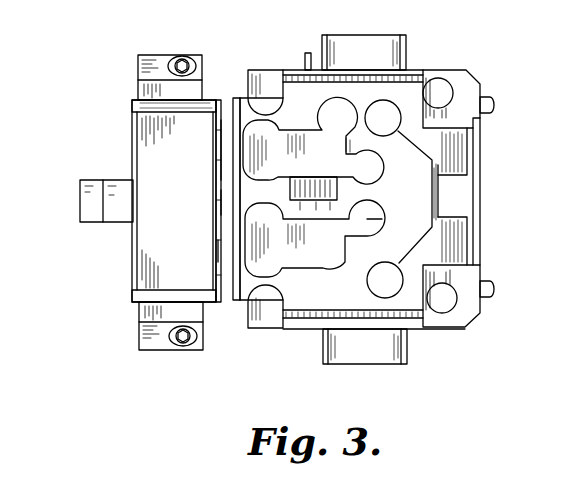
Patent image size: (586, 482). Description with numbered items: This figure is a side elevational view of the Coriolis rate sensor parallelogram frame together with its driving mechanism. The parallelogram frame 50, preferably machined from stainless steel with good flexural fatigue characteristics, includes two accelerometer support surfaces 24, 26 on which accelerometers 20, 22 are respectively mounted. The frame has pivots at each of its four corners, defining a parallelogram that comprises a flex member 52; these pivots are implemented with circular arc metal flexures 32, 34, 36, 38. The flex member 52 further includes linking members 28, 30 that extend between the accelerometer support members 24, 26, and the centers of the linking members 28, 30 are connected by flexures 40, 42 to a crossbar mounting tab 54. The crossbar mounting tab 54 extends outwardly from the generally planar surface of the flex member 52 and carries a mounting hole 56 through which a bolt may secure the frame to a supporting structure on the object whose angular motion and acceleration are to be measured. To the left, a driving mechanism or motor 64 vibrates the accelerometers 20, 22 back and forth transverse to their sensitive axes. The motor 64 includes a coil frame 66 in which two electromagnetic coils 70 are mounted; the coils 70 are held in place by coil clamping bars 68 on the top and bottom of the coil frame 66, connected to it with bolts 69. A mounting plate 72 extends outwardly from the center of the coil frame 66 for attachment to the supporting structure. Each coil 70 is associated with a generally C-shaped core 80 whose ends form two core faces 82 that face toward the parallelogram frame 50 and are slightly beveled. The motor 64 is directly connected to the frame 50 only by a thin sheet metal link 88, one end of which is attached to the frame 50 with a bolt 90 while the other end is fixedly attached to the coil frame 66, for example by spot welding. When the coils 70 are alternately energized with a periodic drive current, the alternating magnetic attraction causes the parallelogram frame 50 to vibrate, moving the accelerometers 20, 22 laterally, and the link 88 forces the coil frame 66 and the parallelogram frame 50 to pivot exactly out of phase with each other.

The accelerometer 20 is at (406, 63).
The accelerometer 22 is at (406, 329).
The accelerometer support surface 24 is at (293, 67).
The accelerometer support surface 26 is at (308, 333).
The linking member 28 is at (240, 178).
The linking member 30 is at (416, 167).
The circular arc metal flexure 32 is at (258, 112).
The circular arc metal flexure 34 is at (365, 120).
The circular arc metal flexure 36 is at (257, 302).
The circular arc metal flexure 38 is at (366, 280).
The flexure 40 is at (262, 197).
The flexure 42 is at (365, 217).
The parallelogram frame 50 is at (483, 68).
The flex member 52 is at (475, 316).
The crossbar mounting tab 54 is at (300, 213).
The mounting hole 56 is at (315, 223).
The driving mechanism 64 is at (120, 244).
The coil frame 66 is at (133, 143).
The coil clamping bar 68 is at (138, 67).
The bolt 69 is at (182, 55).
The electromagnetic coil 70 is at (132, 107).
The mounting plate 72 is at (80, 217).
The C-shaped core 80 is at (213, 133).
The core face 82 is at (230, 97).
The thin sheet metal link 88 is at (235, 205).
The bolt 90 is at (215, 254).